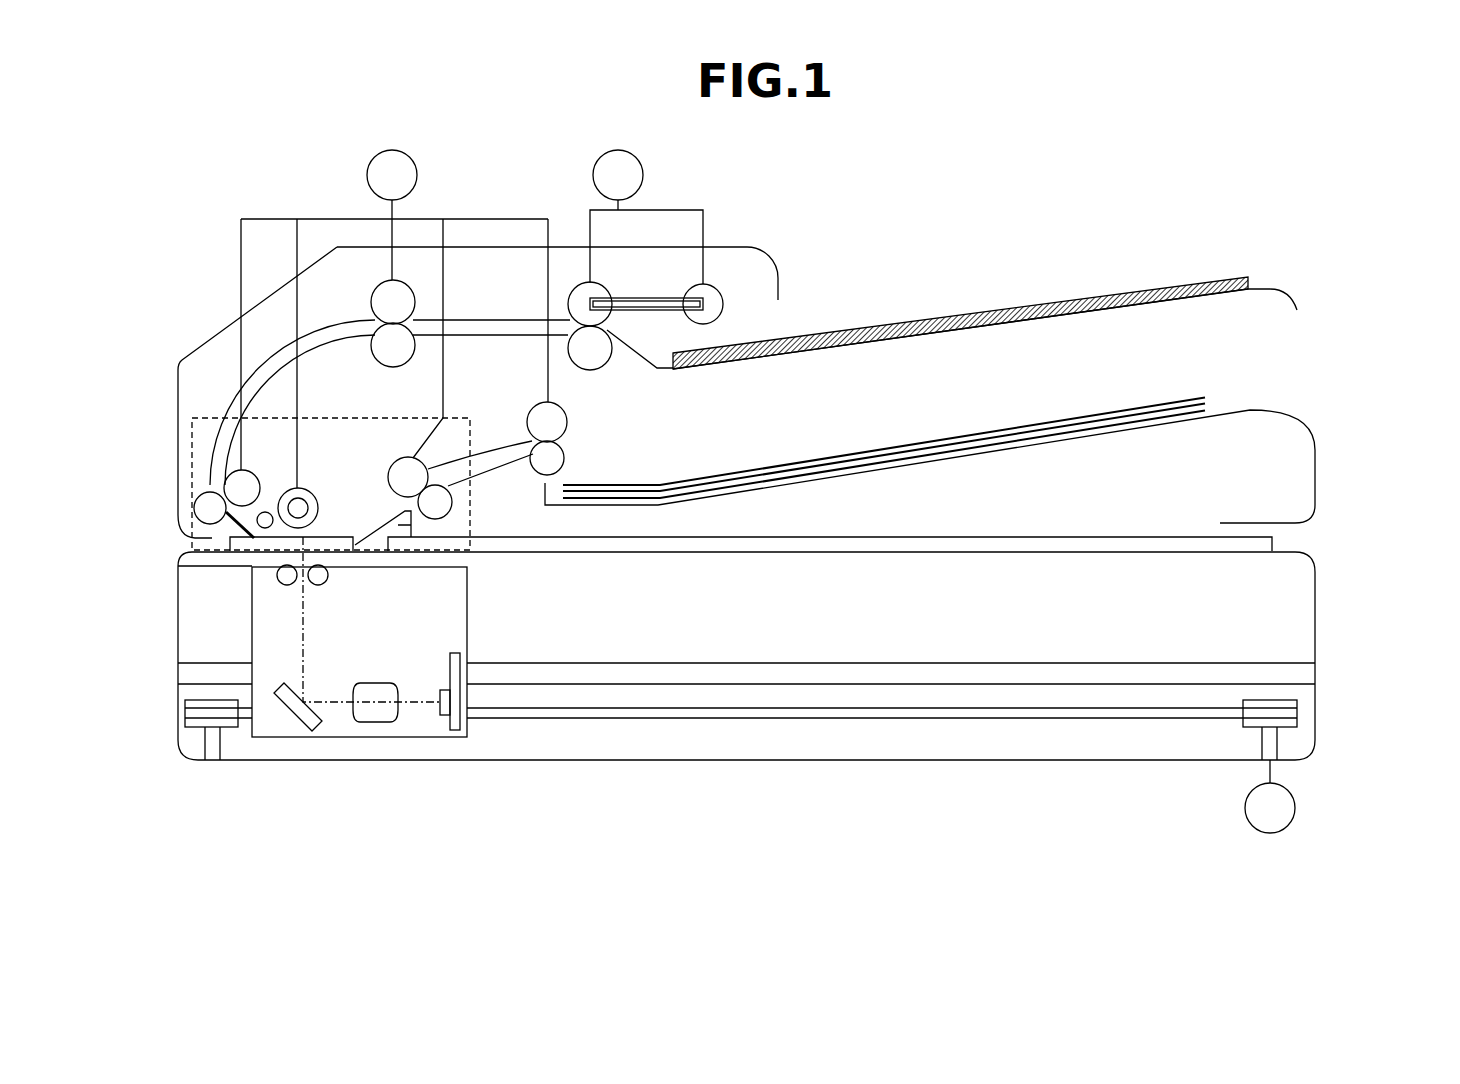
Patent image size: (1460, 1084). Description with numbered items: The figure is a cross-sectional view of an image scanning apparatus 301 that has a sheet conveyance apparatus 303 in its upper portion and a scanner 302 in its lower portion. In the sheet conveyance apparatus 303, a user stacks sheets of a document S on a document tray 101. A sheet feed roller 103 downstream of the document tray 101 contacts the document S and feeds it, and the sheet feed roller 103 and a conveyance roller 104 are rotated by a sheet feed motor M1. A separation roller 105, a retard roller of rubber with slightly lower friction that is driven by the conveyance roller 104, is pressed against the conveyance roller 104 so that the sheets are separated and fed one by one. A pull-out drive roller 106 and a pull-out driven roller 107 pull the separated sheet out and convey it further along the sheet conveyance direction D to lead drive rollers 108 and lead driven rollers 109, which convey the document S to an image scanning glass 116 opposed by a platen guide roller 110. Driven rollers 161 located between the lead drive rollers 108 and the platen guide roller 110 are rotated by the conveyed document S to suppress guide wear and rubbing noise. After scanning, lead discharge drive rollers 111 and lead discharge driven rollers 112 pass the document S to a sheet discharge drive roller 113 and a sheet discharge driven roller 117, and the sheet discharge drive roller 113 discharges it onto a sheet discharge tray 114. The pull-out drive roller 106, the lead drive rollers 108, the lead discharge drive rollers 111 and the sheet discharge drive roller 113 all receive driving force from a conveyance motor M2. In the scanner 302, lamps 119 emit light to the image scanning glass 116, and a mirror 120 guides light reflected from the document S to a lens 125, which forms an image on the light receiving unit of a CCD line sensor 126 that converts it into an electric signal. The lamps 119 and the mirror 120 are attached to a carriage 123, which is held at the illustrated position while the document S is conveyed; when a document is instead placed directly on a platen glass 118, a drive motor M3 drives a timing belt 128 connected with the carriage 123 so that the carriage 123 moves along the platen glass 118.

The document tray 101 is at (1262, 285).
The sheet feed roller 103 is at (722, 287).
The conveyance roller 104 is at (572, 284).
The separation roller 105 is at (595, 370).
The pull-out drive roller 106 is at (377, 282).
The pull-out driven roller 107 is at (383, 366).
The lead drive rollers 108 is at (232, 487).
The lead driven rollers 109 is at (196, 508).
The platen guide roller 110 is at (316, 494).
The lead discharge drive rollers 111 is at (393, 459).
The lead discharge driven rollers 112 is at (452, 507).
The sheet discharge drive roller 113 is at (531, 413).
The sheet discharge tray 114 is at (1250, 409).
The image scanning glass 116 is at (282, 548).
The sheet discharge driven roller 117 is at (565, 456).
The platen glass 118 is at (905, 536).
The lamps 119 is at (288, 585).
The mirror 120 is at (290, 722).
The carriage 123 is at (322, 740).
The lens 125 is at (378, 722).
The CCD line sensor 126 is at (448, 718).
The timing belt 128 is at (1130, 718).
The driven rollers 161 is at (262, 528).
The image scanning apparatus 301 is at (1348, 438).
The scanner 302 is at (1332, 692).
The sheet conveyance apparatus 303 is at (1312, 250).
The document S is at (968, 312).
The conveying direction D is at (272, 406).
The sheet feed motor M1 is at (646, 217).
The conveyance motor M2 is at (392, 215).
The drive motor M3 is at (1270, 796).